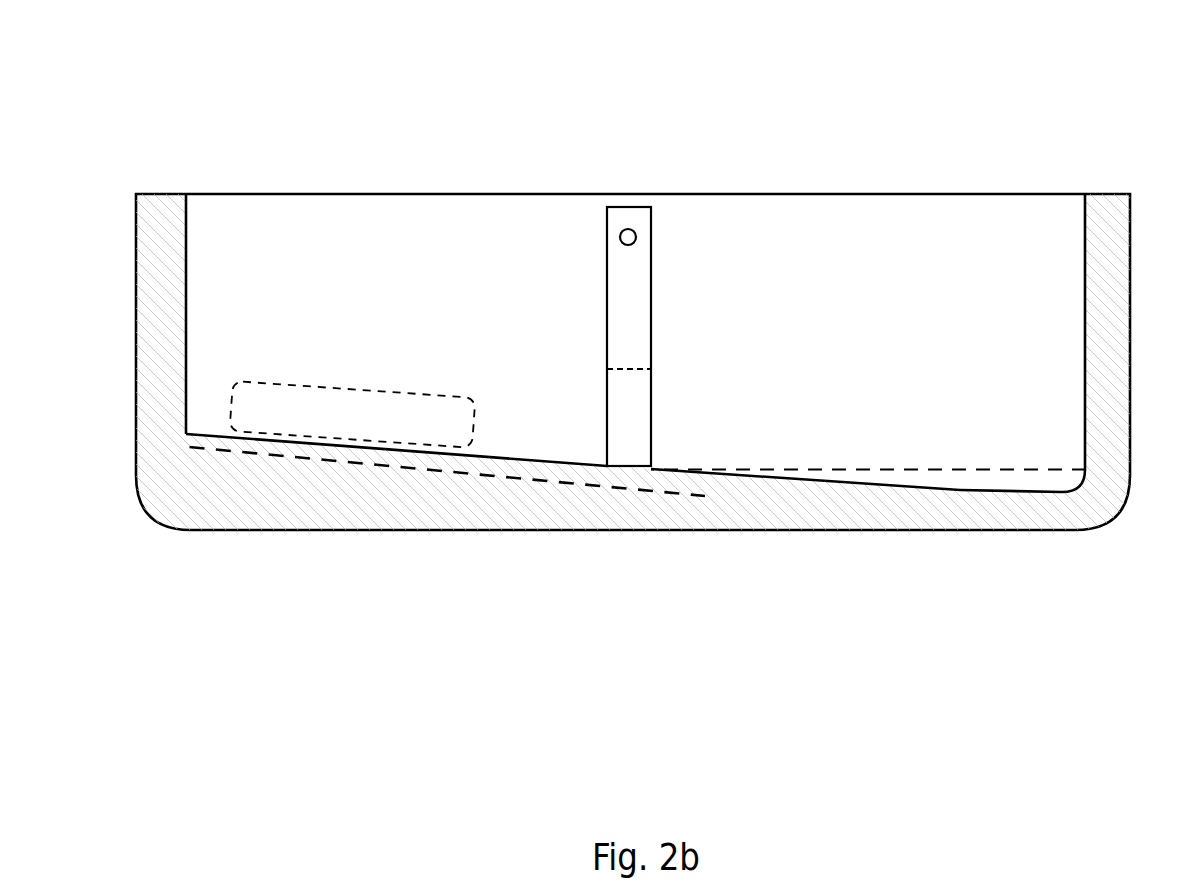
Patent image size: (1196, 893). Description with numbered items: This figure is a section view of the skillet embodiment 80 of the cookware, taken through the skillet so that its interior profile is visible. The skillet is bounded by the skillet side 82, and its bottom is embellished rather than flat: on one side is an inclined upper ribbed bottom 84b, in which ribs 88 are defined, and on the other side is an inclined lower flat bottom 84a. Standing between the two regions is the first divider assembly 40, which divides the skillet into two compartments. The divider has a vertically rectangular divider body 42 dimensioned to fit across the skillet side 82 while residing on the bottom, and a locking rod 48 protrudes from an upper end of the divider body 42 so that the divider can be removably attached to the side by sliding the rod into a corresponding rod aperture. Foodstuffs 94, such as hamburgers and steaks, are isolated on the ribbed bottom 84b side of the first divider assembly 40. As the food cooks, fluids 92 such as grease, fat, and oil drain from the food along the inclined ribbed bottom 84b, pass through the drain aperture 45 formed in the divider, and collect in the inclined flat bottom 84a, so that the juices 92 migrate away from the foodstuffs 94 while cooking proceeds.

The skillet embodiment 80 is at (945, 194).
The skillet side 82 is at (150, 320).
The flat bottom 84a is at (897, 492).
The ribbed bottom 84b is at (343, 463).
The ribs 88 is at (284, 437).
The juices 92 is at (816, 467).
The foodstuffs 94 is at (432, 394).
The first divider assembly 40 is at (679, 297).
The divider body 42 is at (617, 258).
The drain aperture 45 is at (628, 369).
The locking rod 48 is at (633, 230).